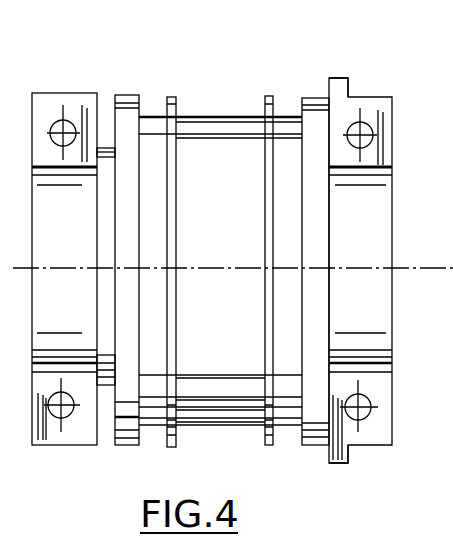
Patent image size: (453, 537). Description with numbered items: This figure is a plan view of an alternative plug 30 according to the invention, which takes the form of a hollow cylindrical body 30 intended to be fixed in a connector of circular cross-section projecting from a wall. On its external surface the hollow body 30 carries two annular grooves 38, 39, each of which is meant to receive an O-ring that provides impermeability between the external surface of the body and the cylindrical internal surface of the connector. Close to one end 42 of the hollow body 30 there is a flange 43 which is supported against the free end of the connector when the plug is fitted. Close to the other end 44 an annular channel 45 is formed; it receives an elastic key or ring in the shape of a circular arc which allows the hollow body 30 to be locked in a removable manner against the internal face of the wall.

The plug 30 is at (225, 100).
The annular groove 38 is at (157, 110).
The annular groove 39 is at (287, 110).
The end 42 is at (394, 120).
The flange 43 is at (342, 86).
The other end 44 is at (32, 145).
The annular channel 45 is at (107, 112).